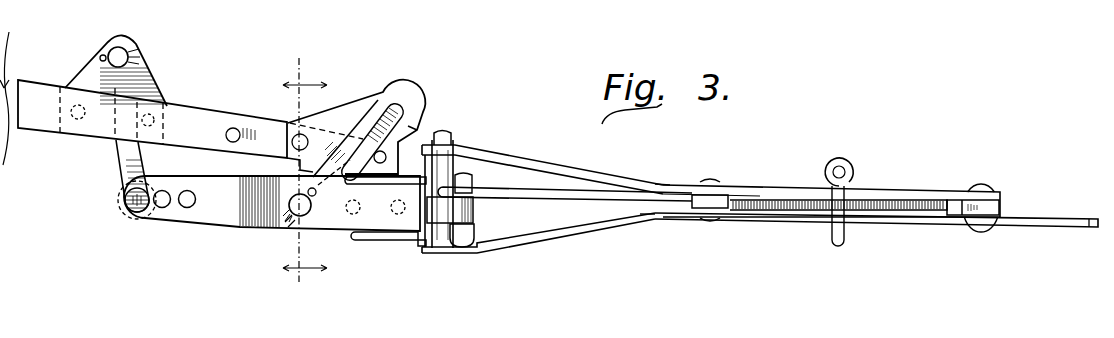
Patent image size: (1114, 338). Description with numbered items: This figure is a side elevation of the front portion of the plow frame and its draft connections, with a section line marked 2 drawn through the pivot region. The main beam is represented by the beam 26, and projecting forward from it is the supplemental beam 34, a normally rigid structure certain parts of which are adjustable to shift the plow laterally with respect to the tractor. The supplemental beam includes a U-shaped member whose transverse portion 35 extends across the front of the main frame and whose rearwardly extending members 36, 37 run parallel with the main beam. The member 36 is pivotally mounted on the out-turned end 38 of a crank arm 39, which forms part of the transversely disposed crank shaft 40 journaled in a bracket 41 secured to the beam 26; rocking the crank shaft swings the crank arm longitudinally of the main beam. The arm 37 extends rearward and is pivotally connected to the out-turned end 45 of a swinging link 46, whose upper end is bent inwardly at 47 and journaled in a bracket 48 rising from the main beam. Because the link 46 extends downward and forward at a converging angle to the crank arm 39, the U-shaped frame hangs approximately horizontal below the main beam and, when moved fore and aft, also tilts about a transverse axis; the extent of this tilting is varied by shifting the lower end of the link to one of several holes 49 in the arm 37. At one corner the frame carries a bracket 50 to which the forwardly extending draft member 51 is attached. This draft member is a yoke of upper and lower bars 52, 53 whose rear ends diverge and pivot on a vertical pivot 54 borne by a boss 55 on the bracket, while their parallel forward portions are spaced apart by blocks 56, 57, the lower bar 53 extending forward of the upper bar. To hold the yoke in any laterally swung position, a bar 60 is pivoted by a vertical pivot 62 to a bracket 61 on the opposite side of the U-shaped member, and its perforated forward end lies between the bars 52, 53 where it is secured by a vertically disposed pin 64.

The section line 2- 2 is at (305, 180).
The beam 26 is at (38, 132).
The supplemental beam 34 is at (661, 180).
The transverse portion 35 is at (421, 238).
The rearwardly extending member 36 is at (290, 226).
The rearwardly extending member 37 is at (226, 219).
The out-turned end 38 is at (306, 220).
The crank arm 39 is at (383, 110).
The crank shaft 40 is at (404, 105).
The bracket 41 is at (418, 128).
The out-turned end 45 is at (124, 204).
The swinging link 46 is at (121, 160).
The inwardly bent upper end 47 is at (130, 50).
The bracket 48 is at (150, 86).
The holes 49 is at (185, 208).
The bracket 50 is at (462, 178).
The draft member 51 is at (1002, 192).
The upper bar 52 is at (592, 172).
The lower bar 53 is at (577, 229).
The vertical pivot 54 is at (446, 134).
The boss 55 is at (440, 186).
The block 56 is at (725, 194).
The block 57 is at (1003, 207).
The bar 60 is at (641, 205).
The bracket 61 is at (476, 211).
The vertical pivot 62 is at (468, 244).
The pin 64 is at (853, 178).